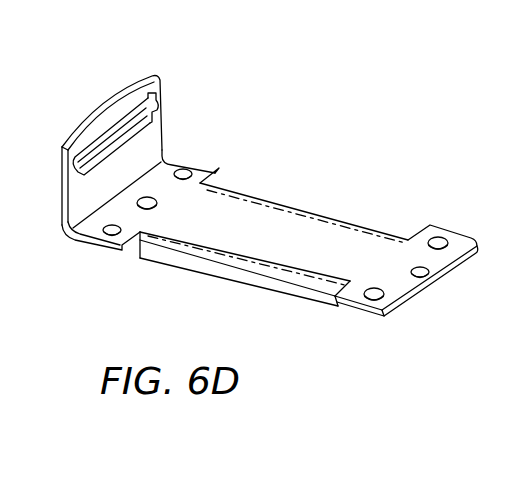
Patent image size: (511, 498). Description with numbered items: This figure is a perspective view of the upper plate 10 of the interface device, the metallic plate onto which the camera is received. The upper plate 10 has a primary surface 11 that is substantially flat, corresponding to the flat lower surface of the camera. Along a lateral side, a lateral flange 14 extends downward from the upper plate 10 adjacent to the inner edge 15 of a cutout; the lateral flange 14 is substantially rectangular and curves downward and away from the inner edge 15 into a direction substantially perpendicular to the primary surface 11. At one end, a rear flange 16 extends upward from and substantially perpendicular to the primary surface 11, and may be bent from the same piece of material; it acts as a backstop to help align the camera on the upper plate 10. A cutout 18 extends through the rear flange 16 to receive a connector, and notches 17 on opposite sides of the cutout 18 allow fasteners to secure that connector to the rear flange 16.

The upper plate 10 is at (360, 120).
The primary surface 11 is at (325, 236).
The lateral flange 14 is at (185, 262).
The inner edge 15 is at (250, 192).
The rear flange 16 is at (95, 118).
The notch 17 is at (120, 150).
The cutout 18 is at (118, 128).